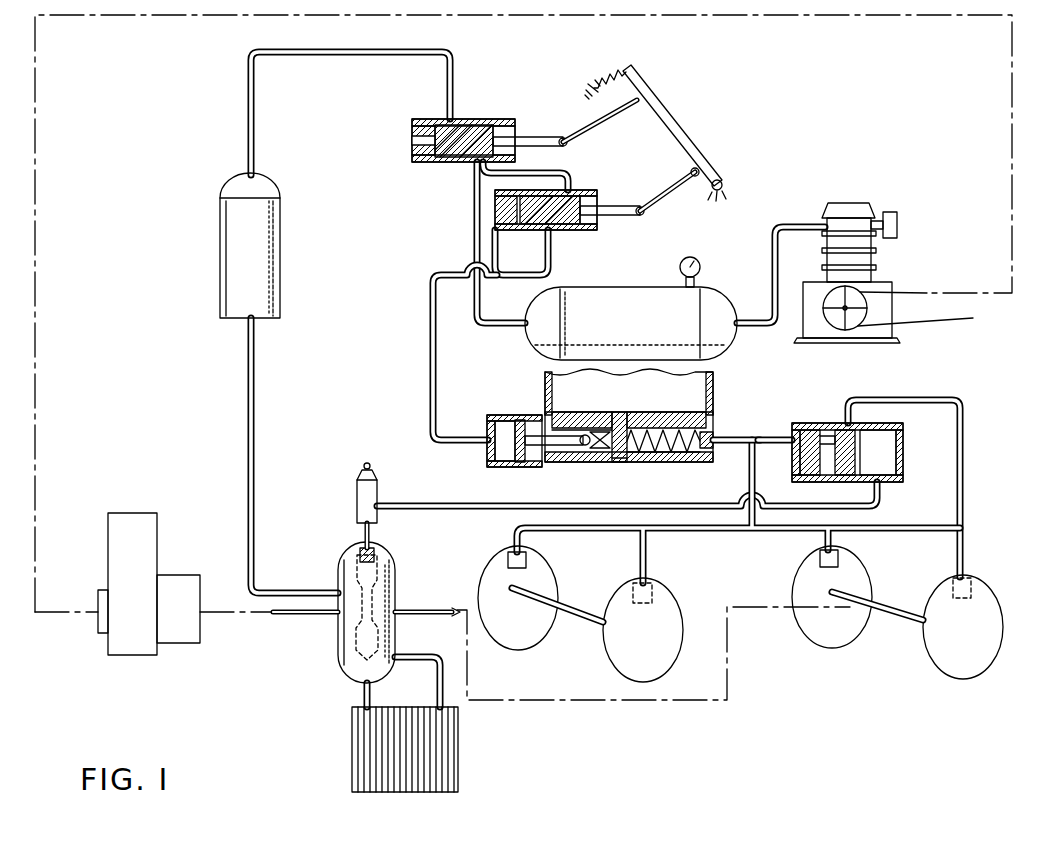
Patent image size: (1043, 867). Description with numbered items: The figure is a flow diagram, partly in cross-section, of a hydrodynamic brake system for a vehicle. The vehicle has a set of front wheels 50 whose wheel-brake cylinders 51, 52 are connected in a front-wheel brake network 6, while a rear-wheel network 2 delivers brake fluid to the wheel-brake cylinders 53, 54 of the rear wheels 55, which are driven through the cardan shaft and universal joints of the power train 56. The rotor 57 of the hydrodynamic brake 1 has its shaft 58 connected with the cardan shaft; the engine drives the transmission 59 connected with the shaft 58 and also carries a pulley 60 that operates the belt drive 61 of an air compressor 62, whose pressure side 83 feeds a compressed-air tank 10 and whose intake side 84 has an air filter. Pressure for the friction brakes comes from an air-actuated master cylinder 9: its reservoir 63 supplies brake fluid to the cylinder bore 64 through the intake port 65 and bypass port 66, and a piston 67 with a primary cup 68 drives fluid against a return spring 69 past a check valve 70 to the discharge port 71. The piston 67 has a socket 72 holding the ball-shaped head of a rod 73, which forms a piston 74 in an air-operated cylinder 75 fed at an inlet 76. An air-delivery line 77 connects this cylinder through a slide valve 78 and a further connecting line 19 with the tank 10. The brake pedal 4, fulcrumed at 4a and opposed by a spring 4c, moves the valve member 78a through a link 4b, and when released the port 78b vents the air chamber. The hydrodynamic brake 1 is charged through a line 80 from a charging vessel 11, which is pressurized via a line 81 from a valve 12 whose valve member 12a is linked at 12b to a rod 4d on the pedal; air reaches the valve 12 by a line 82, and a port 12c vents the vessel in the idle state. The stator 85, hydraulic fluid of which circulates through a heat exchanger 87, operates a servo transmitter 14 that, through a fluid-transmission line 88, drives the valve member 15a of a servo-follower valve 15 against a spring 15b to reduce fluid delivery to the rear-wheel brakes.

The hydrodynamic brake 1 is at (332, 668).
The rear-wheel network 2 is at (978, 457).
The brake pedal 4 is at (666, 122).
The fulcrum 4a is at (724, 184).
The link 4b is at (665, 200).
The spring 4c is at (594, 84).
The rod 4d is at (600, 126).
The front-wheel brake network 6 is at (719, 551).
The master cylinder 9 is at (477, 394).
The compressed-air tank 10 is at (581, 300).
The charging vessel 11 is at (221, 257).
The valve 12 is at (418, 166).
The valve member 12a is at (466, 124).
The linkage 12b is at (530, 138).
The port 12c is at (411, 144).
The servo transmitter 14 is at (356, 500).
The servo-follower valve 15 is at (829, 421).
The valve member 15a is at (872, 448).
The spring 15b is at (808, 430).
The connecting line 19 is at (540, 173).
The front wheels 50 is at (600, 669).
The wheel-brake cylinder 51 is at (527, 566).
The wheel-brake cylinder 52 is at (660, 598).
The wheel-brake cylinder 53 is at (841, 560).
The wheel-brake cylinder 54 is at (986, 580).
The rear wheels 55 is at (904, 651).
The power train 56 is at (727, 700).
The rotor 57 is at (340, 682).
The shaft 58 is at (417, 605).
The transmission 59 is at (178, 648).
The pulley 60 is at (98, 622).
The belt drive 61 is at (868, 308).
The air compressor 62 is at (890, 287).
The reservoir 63 is at (717, 382).
The cylinder bore 64 is at (596, 460).
The intake port 65 is at (604, 414).
The bypass port 66 is at (640, 414).
The piston 67 is at (617, 458).
The primary cup 68 is at (642, 458).
The return spring 69 is at (680, 426).
The check valve 70 is at (716, 430).
The discharge port 71 is at (745, 434).
The socket 72 is at (585, 447).
The rod 73 is at (560, 448).
The piston 74 is at (517, 418).
The air-operated cylinder 75 is at (503, 462).
The inlet 76 is at (482, 448).
The air-delivery line 77 is at (428, 333).
The slide valve 78 is at (586, 232).
The valve member 78a is at (575, 207).
The port 78b is at (500, 233).
The line 80 is at (247, 377).
The line 81 is at (327, 50).
The line 82 is at (474, 193).
The pressure side 83 is at (797, 216).
The intake side 84 is at (890, 212).
The stator 85 is at (338, 635).
The heat exchanger 87 is at (352, 769).
The fluid-transmission line 88 is at (440, 512).